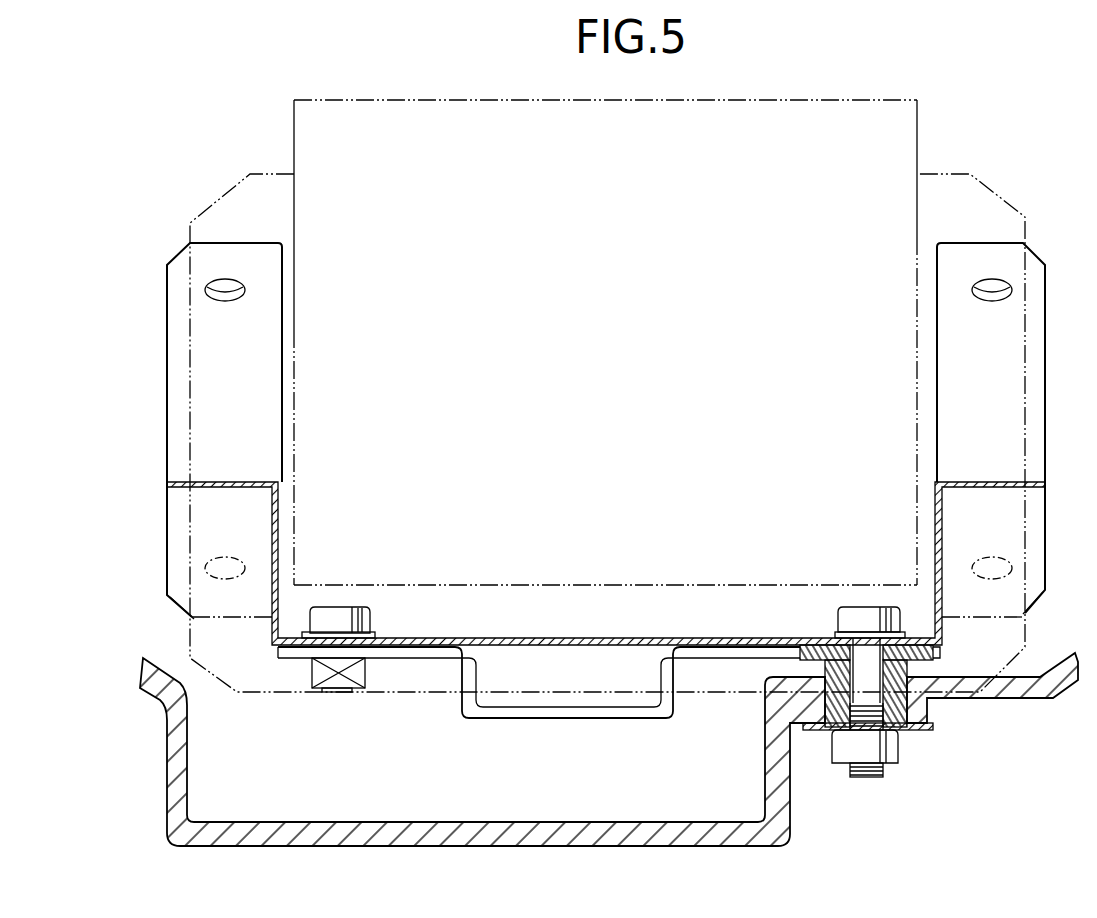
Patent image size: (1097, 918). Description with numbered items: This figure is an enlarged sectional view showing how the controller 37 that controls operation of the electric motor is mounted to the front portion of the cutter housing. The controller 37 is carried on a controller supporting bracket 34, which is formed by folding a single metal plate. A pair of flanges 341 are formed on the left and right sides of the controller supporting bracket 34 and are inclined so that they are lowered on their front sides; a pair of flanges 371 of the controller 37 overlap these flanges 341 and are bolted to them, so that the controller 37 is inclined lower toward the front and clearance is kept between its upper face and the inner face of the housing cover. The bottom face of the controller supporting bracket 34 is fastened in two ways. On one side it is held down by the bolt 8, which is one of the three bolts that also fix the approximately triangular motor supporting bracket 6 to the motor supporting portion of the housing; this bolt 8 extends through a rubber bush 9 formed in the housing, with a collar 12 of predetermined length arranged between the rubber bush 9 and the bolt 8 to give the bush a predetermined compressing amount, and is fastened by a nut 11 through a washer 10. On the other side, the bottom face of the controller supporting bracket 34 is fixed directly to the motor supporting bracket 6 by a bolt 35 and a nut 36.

The controller 37 is at (717, 100).
The flange of the controller 371 is at (980, 183).
The flange of the controller supporting bracket 341 is at (227, 468).
The controller supporting bracket 34 is at (657, 640).
The bolt 35 is at (348, 612).
The nut 36 is at (352, 682).
The motor supporting bracket 6 is at (503, 718).
The bolt 8 is at (860, 605).
The collar 12 is at (837, 630).
The rubber bush 9 is at (918, 700).
The washer 10 is at (822, 730).
The nut 11 is at (783, 815).